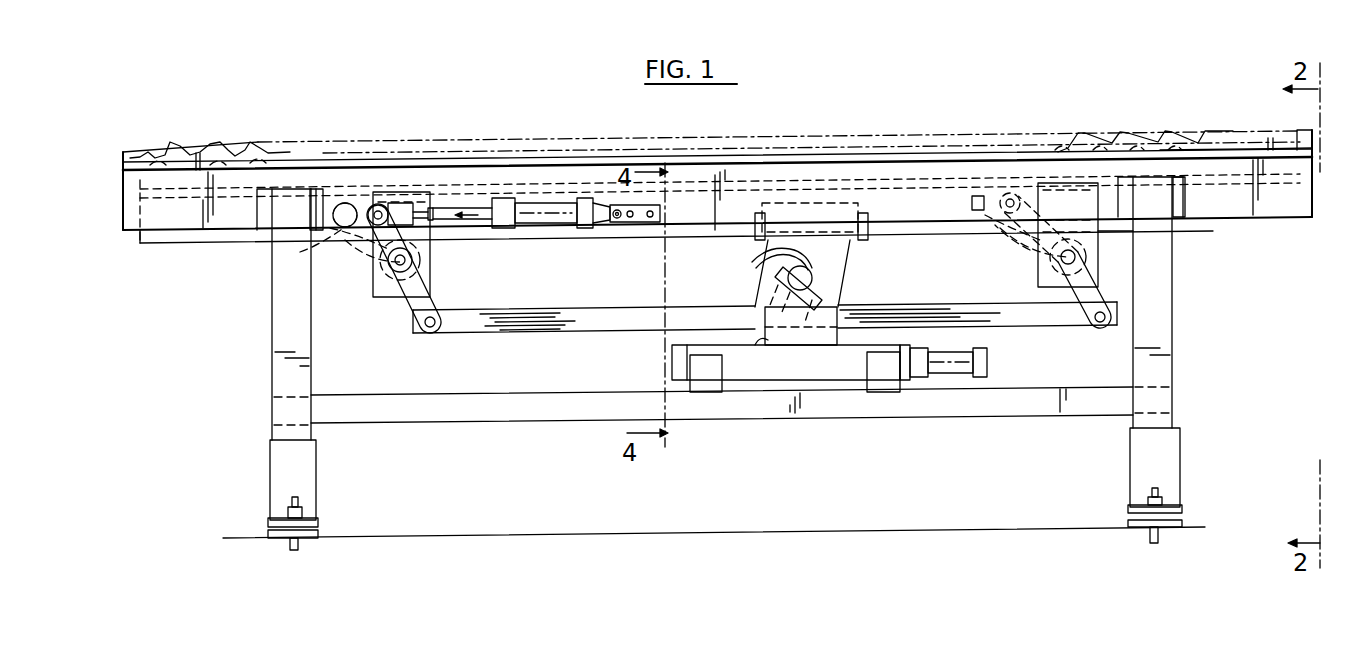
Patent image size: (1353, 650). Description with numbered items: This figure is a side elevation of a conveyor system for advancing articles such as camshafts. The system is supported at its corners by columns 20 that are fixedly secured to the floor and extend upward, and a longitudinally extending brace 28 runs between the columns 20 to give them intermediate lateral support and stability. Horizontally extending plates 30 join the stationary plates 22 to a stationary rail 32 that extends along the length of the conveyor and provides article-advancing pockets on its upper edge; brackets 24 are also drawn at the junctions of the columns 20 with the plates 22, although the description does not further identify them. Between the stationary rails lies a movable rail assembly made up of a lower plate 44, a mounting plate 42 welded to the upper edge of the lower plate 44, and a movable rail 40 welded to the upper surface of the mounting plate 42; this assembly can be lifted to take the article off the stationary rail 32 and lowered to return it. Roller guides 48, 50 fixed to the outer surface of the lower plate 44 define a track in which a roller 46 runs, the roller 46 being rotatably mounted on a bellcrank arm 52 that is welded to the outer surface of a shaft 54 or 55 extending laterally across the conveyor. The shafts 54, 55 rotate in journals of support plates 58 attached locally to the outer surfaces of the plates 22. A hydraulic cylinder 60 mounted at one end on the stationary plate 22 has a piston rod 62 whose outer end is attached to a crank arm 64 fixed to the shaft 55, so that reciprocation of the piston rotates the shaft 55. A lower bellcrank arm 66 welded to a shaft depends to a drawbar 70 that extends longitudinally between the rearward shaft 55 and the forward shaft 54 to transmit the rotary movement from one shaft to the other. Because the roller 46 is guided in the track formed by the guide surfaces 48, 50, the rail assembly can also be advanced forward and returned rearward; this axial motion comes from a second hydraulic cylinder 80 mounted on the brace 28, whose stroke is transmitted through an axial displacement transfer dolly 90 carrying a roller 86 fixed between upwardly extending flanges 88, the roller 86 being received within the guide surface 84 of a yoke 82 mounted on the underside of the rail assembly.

The columns 20 is at (282, 330).
The plates 22 is at (188, 222).
The brackets 24 is at (258, 213).
The longitudinally extending brace 28 is at (1105, 405).
The horizontally extending plates 30 is at (1233, 152).
The stationary rail 32 is at (212, 158).
The movable rail 40 is at (232, 160).
The mounting plate 42 is at (1196, 178).
The lower plate 44 is at (940, 236).
The roller 46 is at (360, 204).
The roller guide 48 is at (316, 190).
The roller guide 50 is at (432, 252).
The bellcrank arm 52 is at (298, 258).
The shaft 54 is at (1076, 257).
The shaft 55 is at (398, 276).
The support plates 58 is at (432, 284).
The hydraulic cylinder 60 is at (557, 218).
The piston rod 62 is at (432, 207).
The crank arm 64 is at (372, 238).
The lower bellcrank arm 66 is at (1098, 298).
The drawbar 70 is at (470, 322).
The second hydraulic cylinder 80 is at (987, 360).
The yoke 82 is at (852, 262).
The guide surface 84 is at (760, 292).
The roller 86 is at (778, 252).
The upwardly extending flange 88 is at (765, 340).
The axial displacement transfer dolly 90 is at (776, 366).